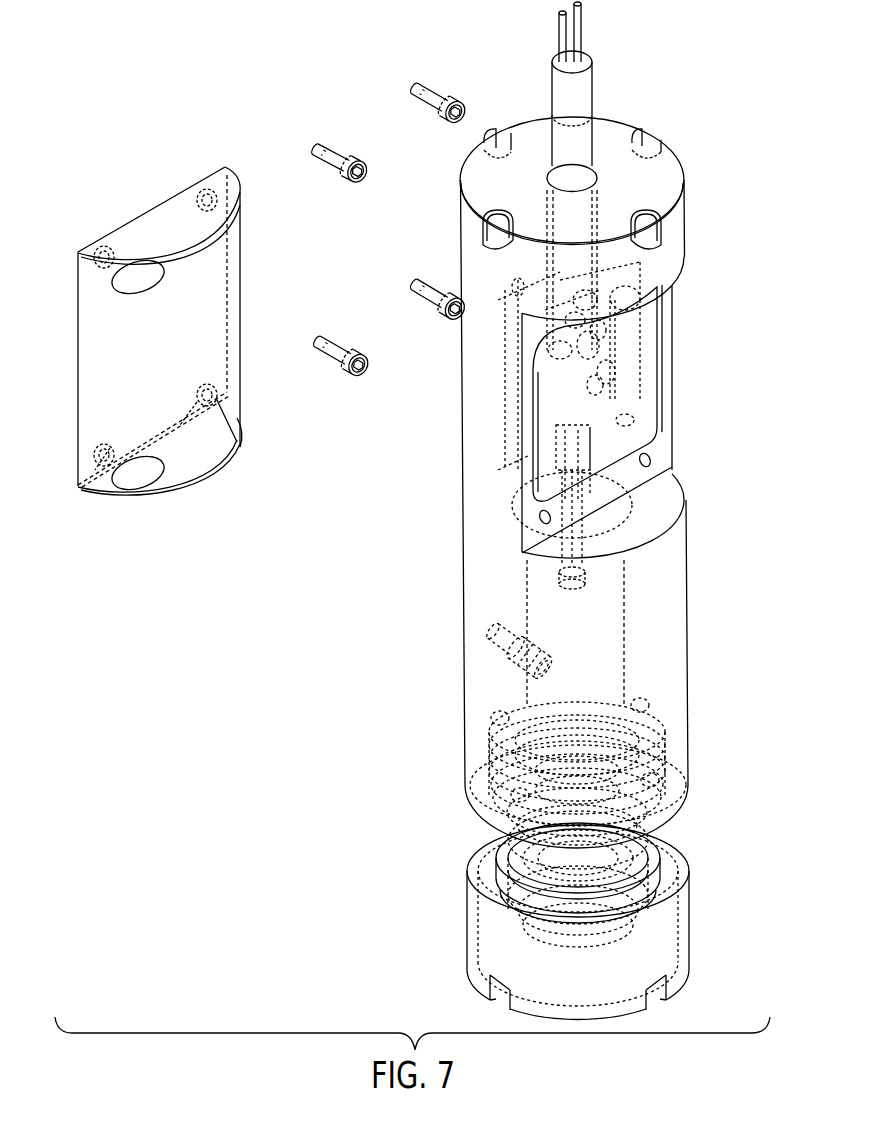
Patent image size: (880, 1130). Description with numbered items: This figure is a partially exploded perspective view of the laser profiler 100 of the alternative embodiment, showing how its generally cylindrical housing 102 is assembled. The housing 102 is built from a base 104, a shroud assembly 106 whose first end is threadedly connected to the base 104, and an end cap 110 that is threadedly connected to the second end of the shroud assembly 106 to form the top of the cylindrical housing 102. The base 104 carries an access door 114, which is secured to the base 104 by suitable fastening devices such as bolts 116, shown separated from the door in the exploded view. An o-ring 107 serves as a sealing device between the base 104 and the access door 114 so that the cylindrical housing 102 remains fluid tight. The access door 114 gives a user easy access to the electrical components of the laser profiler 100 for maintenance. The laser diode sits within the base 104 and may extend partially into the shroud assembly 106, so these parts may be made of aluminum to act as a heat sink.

The laser profiler 100 is at (626, 86).
The cylindrical housing 102 is at (703, 423).
The base 104 is at (481, 648).
The shroud assembly 106 is at (625, 870).
The o-ring 107 is at (665, 350).
The end cap 110 is at (678, 915).
The access door 114 is at (243, 310).
The bolts 116 is at (438, 90).